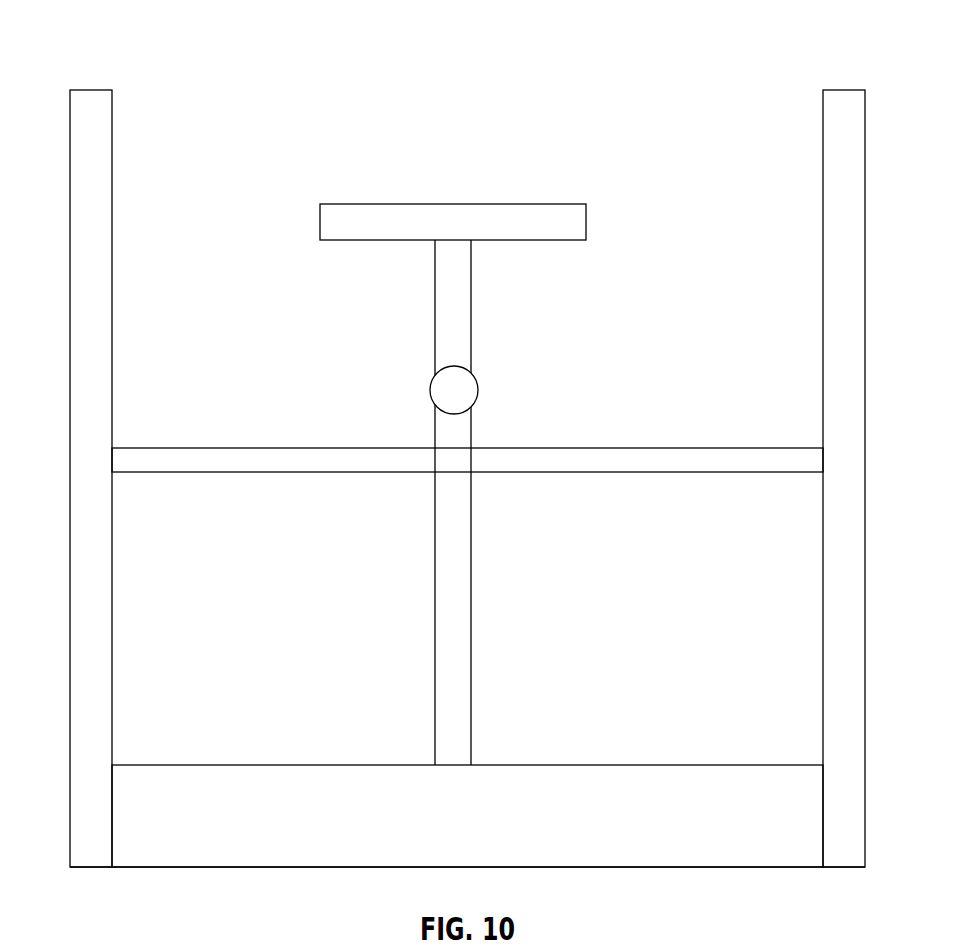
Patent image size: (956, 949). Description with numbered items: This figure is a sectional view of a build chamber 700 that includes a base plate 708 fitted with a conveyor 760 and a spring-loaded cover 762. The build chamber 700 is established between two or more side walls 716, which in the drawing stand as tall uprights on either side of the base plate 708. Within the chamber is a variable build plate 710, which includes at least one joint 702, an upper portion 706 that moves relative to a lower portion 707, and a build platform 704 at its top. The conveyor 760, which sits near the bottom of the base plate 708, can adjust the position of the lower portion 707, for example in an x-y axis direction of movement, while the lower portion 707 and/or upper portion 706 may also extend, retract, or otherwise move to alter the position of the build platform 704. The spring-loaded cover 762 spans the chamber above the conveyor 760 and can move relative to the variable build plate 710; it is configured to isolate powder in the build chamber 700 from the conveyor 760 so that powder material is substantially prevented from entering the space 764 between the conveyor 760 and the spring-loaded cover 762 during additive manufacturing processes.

The build chamber 700 is at (108, 42).
The joint 702 is at (425, 385).
The build platform 704 is at (418, 205).
The upper portion 706 is at (425, 302).
The lower portion 707 is at (425, 595).
The base plate 708 is at (140, 890).
The variable build plate 710 is at (572, 170).
The side wall 716 is at (68, 250).
The conveyor 760 is at (668, 770).
The spring-loaded cover 762 is at (255, 435).
The space 764 is at (820, 575).